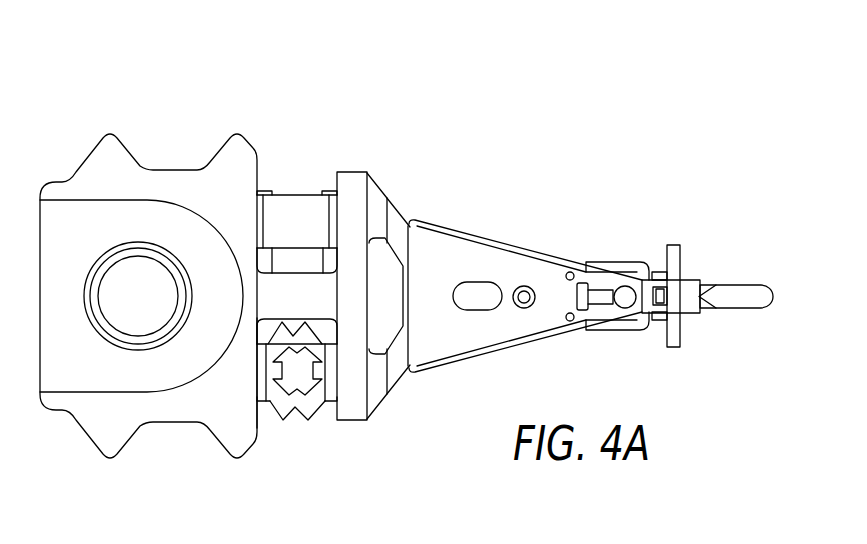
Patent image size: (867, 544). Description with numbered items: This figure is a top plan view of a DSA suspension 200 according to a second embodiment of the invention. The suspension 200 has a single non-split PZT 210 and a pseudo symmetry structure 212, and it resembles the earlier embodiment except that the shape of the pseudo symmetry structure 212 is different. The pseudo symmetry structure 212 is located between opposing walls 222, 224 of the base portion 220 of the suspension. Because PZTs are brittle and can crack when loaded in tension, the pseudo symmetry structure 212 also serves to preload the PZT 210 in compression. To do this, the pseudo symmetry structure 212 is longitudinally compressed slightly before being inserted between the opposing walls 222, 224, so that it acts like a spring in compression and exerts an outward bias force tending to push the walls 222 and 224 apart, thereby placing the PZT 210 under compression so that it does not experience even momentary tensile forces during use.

The DSA suspension 200 is at (472, 170).
The single non-split PZT 210 is at (298, 213).
The pseudo symmetry structure 212 is at (287, 403).
The base portion 220 is at (214, 108).
The opposing wall 222 is at (337, 410).
The opposing wall 224 is at (257, 428).